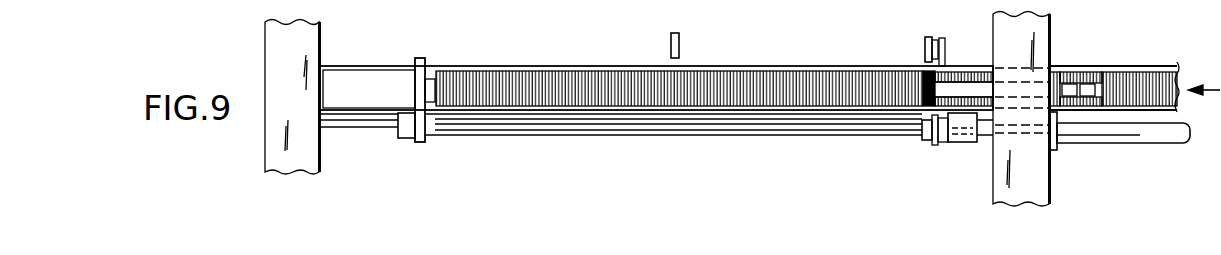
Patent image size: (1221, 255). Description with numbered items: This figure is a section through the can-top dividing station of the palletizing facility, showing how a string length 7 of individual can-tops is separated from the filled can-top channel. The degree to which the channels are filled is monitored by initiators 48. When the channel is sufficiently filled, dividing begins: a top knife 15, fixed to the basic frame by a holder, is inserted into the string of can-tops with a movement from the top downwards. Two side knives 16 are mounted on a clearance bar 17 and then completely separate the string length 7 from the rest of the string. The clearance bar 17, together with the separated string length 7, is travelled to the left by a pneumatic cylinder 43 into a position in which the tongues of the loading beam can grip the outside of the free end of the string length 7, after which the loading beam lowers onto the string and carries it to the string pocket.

The string length 7 is at (534, 82).
The top knife 15 is at (972, 95).
The side knives 16 is at (945, 50).
The clearance bar 17 is at (585, 133).
The pneumatic cylinder 43 is at (1135, 136).
The initiators 48 is at (679, 38).